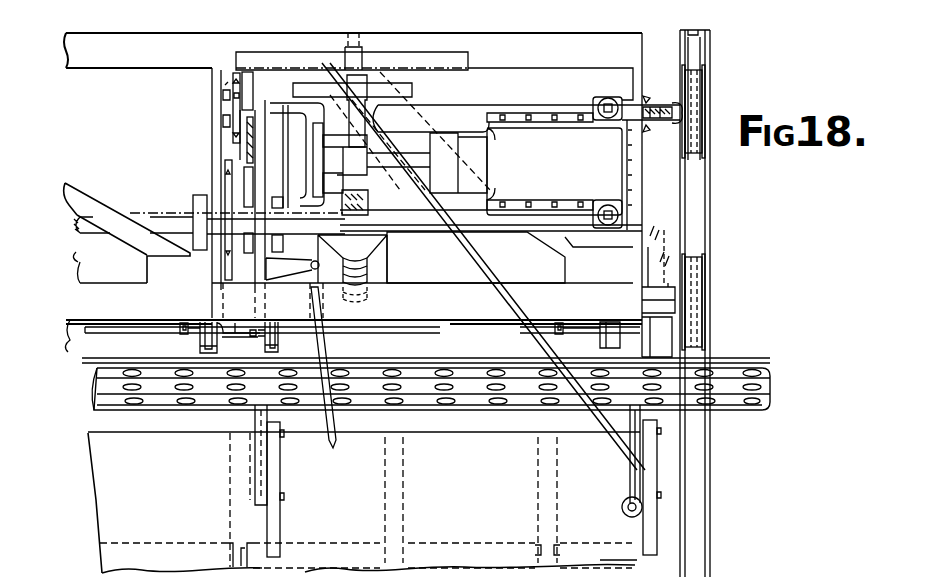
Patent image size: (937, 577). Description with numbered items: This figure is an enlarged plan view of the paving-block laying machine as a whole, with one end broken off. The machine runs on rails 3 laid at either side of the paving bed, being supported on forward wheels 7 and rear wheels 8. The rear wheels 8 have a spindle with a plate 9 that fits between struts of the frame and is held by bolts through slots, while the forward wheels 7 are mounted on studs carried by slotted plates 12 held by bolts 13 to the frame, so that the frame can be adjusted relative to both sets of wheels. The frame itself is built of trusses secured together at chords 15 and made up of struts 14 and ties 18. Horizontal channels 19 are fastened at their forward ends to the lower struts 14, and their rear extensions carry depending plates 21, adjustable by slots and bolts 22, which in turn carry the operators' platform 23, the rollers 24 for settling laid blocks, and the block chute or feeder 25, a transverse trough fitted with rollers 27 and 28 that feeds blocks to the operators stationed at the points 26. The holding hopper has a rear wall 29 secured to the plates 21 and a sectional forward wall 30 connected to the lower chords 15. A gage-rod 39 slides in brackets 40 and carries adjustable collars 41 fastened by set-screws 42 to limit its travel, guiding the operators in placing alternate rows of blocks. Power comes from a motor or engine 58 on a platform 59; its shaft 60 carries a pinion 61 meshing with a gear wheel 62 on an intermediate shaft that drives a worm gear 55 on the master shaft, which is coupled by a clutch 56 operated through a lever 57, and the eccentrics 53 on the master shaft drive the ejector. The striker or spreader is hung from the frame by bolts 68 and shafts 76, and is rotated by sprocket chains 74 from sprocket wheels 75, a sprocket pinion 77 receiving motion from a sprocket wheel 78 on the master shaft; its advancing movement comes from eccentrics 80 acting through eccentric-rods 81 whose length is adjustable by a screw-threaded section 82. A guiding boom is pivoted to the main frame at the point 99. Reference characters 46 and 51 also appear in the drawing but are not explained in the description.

The rails 3 is at (706, 38).
The forward wheels 7 is at (718, 53).
The rear wheels 8 is at (705, 318).
The plate 9 is at (678, 298).
The slotted plates 12 is at (648, 94).
The bolts 13 is at (648, 98).
The struts 14 is at (633, 75).
The chords 15 is at (82, 28).
The ties 18 is at (66, 176).
The horizontal channels 19 is at (258, 460).
The depending plates 21 is at (280, 472).
The slots and bolts 22 is at (284, 435).
The operators' platform 23 is at (92, 480).
The rollers 24 is at (110, 548).
The block chute or feeder 25 is at (120, 410).
The operators' points 26 is at (369, 503).
The rollers 27 is at (194, 404).
The rollers 28 is at (444, 372).
The rear wall 29 is at (94, 360).
The forward wall 30 is at (426, 300).
The gage-rod 39 is at (140, 326).
The brackets 40 is at (222, 330).
The adjustable collars 41 is at (182, 336).
The set-screws 42 is at (181, 321).
The hanger 46 is at (279, 344).
The connecting link 51 is at (240, 322).
The eccentrics 53 is at (193, 198).
The worm gear 55 is at (368, 268).
The clutch 56 is at (322, 198).
The lever 57 is at (322, 342).
The motor or engine 58 is at (514, 132).
The platform 59 is at (450, 110).
The shaft 60 is at (348, 44).
The pinion 61 is at (368, 78).
The gear wheel 62 is at (412, 86).
The bolts 68 is at (676, 102).
The sprocket chains 74 is at (297, 155).
The sprocket wheels 75 is at (228, 70).
The shafts 76 is at (210, 104).
The sprocket pinion 77 is at (223, 118).
The sprocket wheel 78 is at (244, 174).
The eccentrics 80 is at (225, 188).
The eccentric-rods 81 is at (240, 160).
The screw-threaded section 82 is at (256, 160).
The pivot point 99 is at (626, 498).